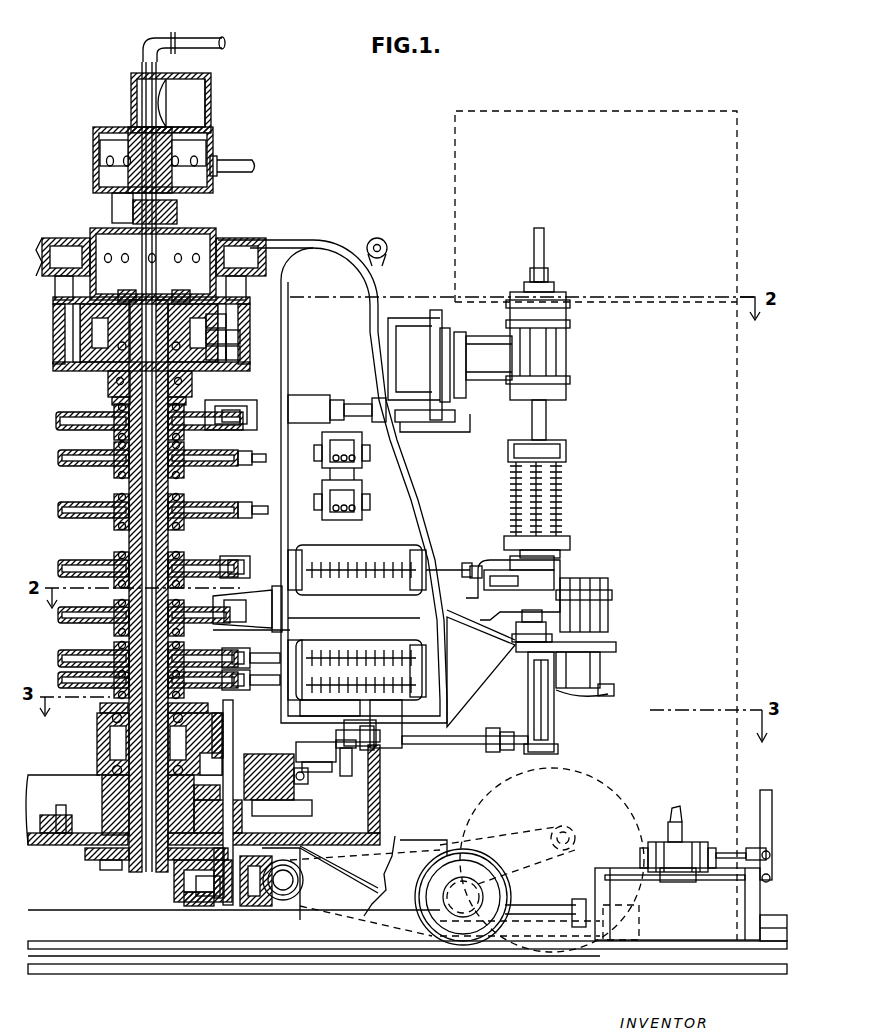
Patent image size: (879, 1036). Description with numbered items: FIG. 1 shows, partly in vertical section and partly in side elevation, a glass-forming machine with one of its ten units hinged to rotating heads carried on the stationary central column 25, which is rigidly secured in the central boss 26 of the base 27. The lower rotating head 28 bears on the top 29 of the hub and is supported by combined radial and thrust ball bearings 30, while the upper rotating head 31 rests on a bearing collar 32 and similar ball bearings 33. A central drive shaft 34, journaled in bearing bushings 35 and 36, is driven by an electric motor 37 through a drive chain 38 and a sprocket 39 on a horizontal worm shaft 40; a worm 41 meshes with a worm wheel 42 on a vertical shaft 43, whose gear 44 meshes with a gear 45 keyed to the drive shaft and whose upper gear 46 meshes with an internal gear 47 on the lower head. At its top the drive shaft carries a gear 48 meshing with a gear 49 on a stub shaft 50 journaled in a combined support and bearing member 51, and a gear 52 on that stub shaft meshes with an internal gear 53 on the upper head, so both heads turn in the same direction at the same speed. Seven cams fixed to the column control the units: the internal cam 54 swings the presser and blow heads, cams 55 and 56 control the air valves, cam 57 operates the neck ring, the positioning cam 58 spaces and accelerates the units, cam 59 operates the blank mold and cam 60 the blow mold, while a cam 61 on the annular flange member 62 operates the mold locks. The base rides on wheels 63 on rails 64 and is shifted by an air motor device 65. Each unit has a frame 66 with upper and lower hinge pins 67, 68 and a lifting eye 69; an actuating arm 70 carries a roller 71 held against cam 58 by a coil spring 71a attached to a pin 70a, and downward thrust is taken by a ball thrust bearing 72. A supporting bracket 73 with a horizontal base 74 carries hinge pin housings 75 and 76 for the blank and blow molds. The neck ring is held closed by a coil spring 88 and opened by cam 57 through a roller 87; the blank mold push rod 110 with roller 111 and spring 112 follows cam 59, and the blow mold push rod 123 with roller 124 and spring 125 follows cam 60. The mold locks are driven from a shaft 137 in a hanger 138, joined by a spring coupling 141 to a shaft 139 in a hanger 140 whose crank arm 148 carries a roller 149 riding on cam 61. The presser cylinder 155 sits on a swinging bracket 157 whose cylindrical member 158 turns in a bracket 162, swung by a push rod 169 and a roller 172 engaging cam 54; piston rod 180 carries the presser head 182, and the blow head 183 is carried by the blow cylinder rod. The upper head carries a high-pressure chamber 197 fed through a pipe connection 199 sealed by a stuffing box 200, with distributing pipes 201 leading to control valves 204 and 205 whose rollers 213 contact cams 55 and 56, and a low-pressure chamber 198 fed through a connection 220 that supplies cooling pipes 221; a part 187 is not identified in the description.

The central column 25 is at (134, 489).
The central boss 26 is at (116, 838).
The base 27 is at (396, 838).
The lower rotating head 28 is at (108, 736).
The top of central hub 29 is at (100, 776).
The combined radial and thrust ball bearings 30 is at (104, 710).
The upper rotating head 31 is at (256, 286).
The bearing collar 32 is at (196, 392).
The combined radial and thrust ball bearings 33 is at (108, 384).
The central drive shaft 34 is at (148, 540).
The bearing bushing 35 is at (128, 836).
The bearing bushing 36 is at (126, 296).
The electric motor 37 is at (622, 790).
The drive chain 38 is at (520, 830).
The sprocket 39 is at (316, 910).
The horizontal worm shaft 40 is at (284, 884).
The worm 41 is at (310, 878).
The worm wheel 42 is at (202, 882).
The vertical shaft 43 is at (244, 818).
The gear 44 is at (212, 878).
The gear 45 is at (178, 864).
The gear 46 is at (280, 800).
The internal gear 47 is at (270, 778).
The gear 48 is at (178, 296).
The gear 49 is at (230, 318).
The stub shaft 50 is at (222, 337).
The combined support and bearing member 51 is at (236, 342).
The gear 52 is at (226, 356).
The internal gear 53 is at (238, 364).
The upper cam 54 is at (58, 420).
The second cam 55 is at (80, 458).
The third cam 56 is at (80, 510).
The fourth cam 57 is at (80, 566).
The positioning cam 58 is at (68, 622).
The cam 59 is at (80, 658).
The bottom cam 60 is at (80, 682).
The cam 61 is at (352, 766).
The annular flange-like member 62 is at (352, 818).
The wheels 63 is at (418, 905).
The rails 64 is at (428, 972).
The air motor device 65 is at (690, 928).
The unit frame 66 is at (396, 476).
The upper hinge pin 67 is at (270, 262).
The lower hinge pin 68 is at (228, 738).
The eye 69 is at (387, 248).
The actuating arm 70 is at (226, 598).
The pin 70a is at (320, 754).
The anti-friction contact roller 71 is at (301, 659).
The coil spring 71a is at (320, 768).
The ball thrust bearing 72 is at (102, 788).
The supporting bracket 73 is at (499, 668).
The horizontal supporting base 74 is at (612, 654).
The hinge pin housing 75 is at (478, 600).
The hinge pin housing 76 is at (604, 608).
The anti-friction roller 87 is at (222, 560).
The coil spring 88 is at (380, 560).
The push rod 110 is at (400, 654).
The anti-friction contact roller 111 is at (224, 650).
The coil spring 112 is at (346, 654).
The push rod 123 is at (620, 692).
The anti-friction roller 124 is at (240, 700).
The coil spring 125 is at (330, 705).
The shaft 137 is at (560, 742).
The depending hanger 138 is at (556, 712).
The shaft 139 is at (466, 740).
The hanger 140 is at (386, 720).
The spring coupling 141 is at (494, 752).
The crank arm 148 is at (360, 753).
The contact roller 149 is at (346, 752).
The presser cylinder 155 is at (550, 356).
The swinging bracket 157 is at (492, 340).
The cylindrical member 158 is at (454, 361).
The bracket 162 is at (414, 316).
The push rod 169 is at (334, 406).
The anti-friction roller 172 is at (240, 416).
The piston rod 180 is at (560, 426).
The presser head 182 is at (568, 528).
The blow head 183 is at (520, 540).
The gear 187 is at (568, 451).
The high pressure air distributing chamber 197 is at (112, 246).
The low pressure air distributing chamber 198 is at (100, 182).
The pipe connection 199 is at (222, 36).
The stuffing box 200 is at (172, 215).
The air distributing pipes 201 is at (182, 255).
The control valve 204 is at (344, 452).
The control valve 205 is at (354, 500).
The anti-friction rollers 213 is at (222, 503).
The air connection 220 is at (198, 97).
The pipes 221 is at (238, 160).